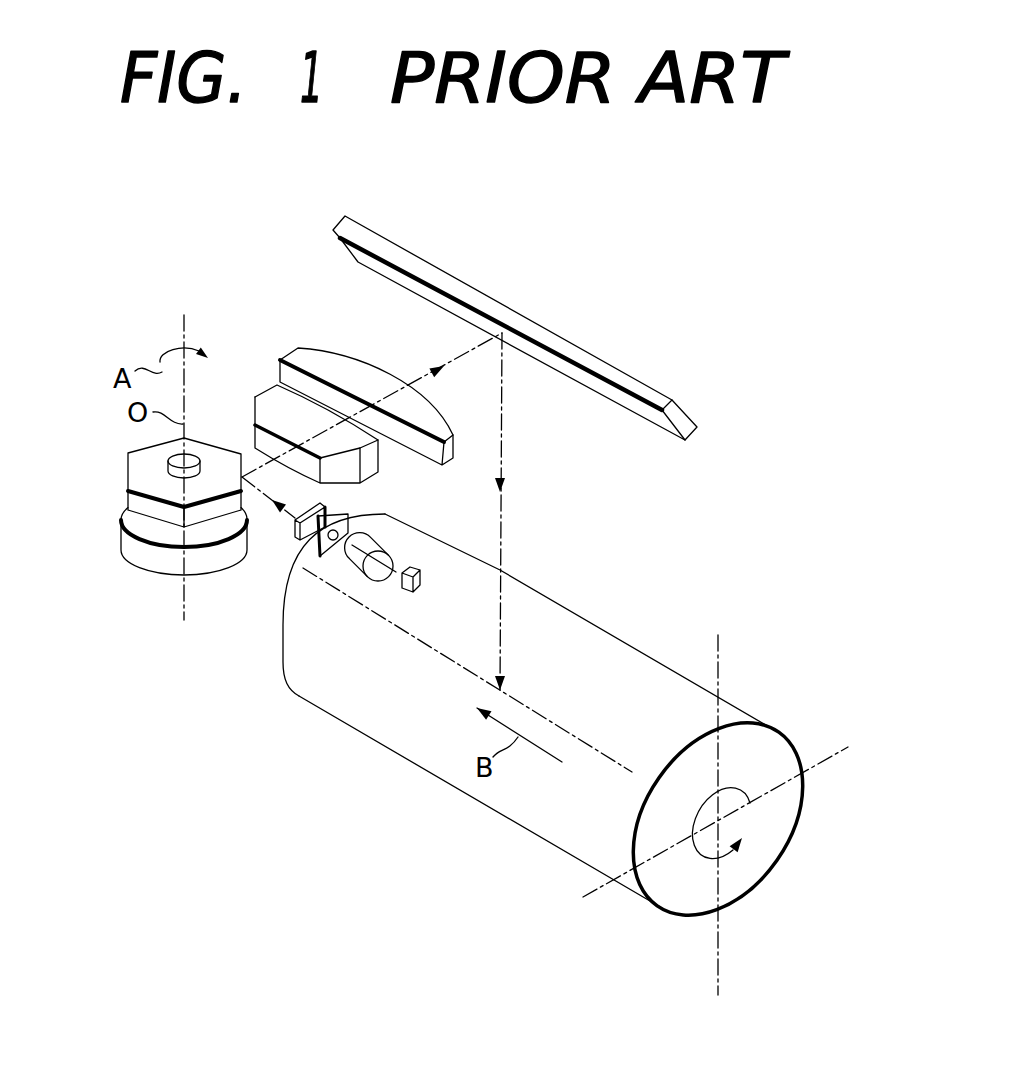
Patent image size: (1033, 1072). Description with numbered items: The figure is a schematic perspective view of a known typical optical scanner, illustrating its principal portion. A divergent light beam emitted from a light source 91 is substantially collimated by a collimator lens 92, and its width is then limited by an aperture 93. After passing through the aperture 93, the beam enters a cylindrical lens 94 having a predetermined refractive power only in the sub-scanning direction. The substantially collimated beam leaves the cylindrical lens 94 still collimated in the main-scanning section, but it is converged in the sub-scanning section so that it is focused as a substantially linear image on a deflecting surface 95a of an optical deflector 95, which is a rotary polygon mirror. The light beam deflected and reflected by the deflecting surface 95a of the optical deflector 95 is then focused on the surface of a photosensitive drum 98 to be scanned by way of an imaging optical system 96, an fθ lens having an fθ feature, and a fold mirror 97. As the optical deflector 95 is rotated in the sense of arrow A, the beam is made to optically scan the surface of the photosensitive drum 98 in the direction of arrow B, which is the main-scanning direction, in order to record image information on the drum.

The light source 91 is at (422, 578).
The collimator lens 92 is at (380, 535).
The aperture 93 is at (352, 515).
The cylindrical lens 94 is at (298, 538).
The optical deflector 95 is at (127, 472).
The deflecting surface 95a is at (150, 507).
The imaging optical system 96 is at (295, 333).
The fold mirror 97 is at (484, 292).
The photosensitive drum 98 is at (570, 609).